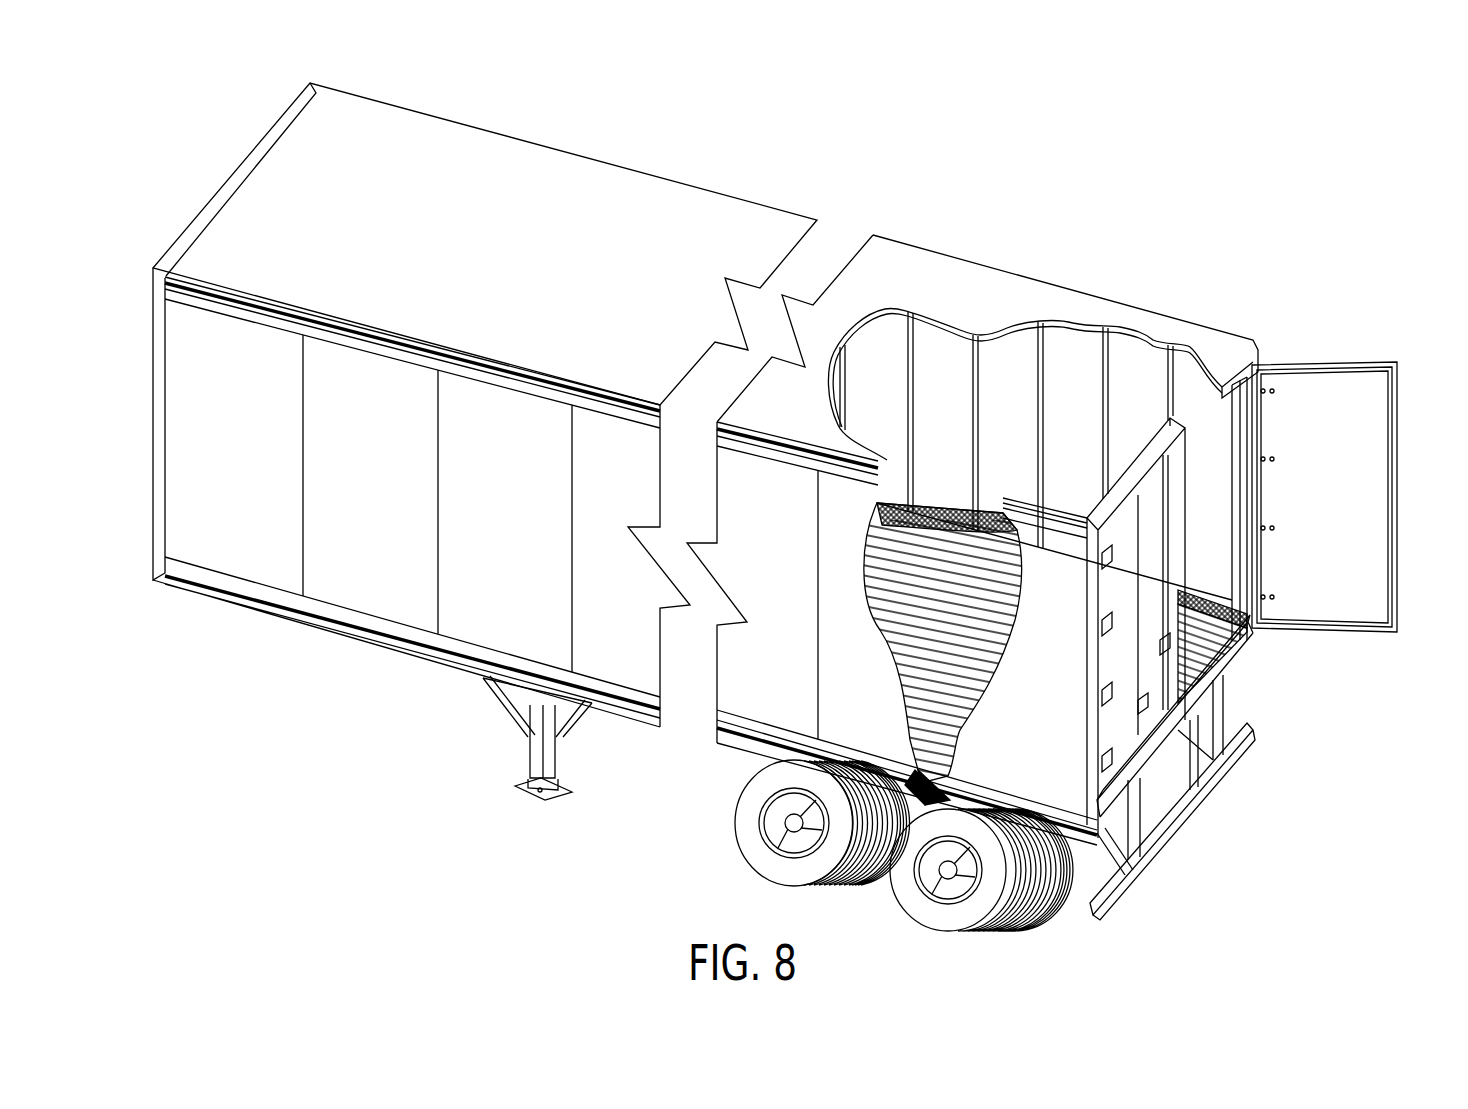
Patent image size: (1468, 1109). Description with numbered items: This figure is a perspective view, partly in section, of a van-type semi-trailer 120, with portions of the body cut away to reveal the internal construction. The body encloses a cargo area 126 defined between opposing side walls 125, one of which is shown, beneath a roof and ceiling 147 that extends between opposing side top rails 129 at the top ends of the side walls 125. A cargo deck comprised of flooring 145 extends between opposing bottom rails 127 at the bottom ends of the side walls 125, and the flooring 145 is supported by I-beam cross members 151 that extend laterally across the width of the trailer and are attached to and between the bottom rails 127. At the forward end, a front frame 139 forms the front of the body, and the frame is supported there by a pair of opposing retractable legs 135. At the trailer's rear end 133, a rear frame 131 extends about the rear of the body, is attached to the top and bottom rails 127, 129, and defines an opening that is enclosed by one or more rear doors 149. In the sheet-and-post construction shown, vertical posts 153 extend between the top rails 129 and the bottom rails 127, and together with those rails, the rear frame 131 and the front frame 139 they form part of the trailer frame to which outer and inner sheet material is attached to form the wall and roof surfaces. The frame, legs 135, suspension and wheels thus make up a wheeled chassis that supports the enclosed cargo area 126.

The trailer 120 is at (767, 508).
The roof and ceiling 147 is at (488, 148).
The front frame 139 is at (153, 436).
The side top rail 129 is at (386, 337).
The side wall 125 is at (362, 577).
The bottom rail 127 is at (248, 607).
The retractable leg 135 is at (530, 757).
The cargo area 126 is at (918, 360).
The vertical post 153 is at (970, 410).
The rear frame 131 is at (1087, 685).
The flooring 145 is at (1235, 667).
The rear end 133 is at (1265, 745).
The rear door 149 is at (1380, 507).
The I-beam cross member 151 is at (935, 785).